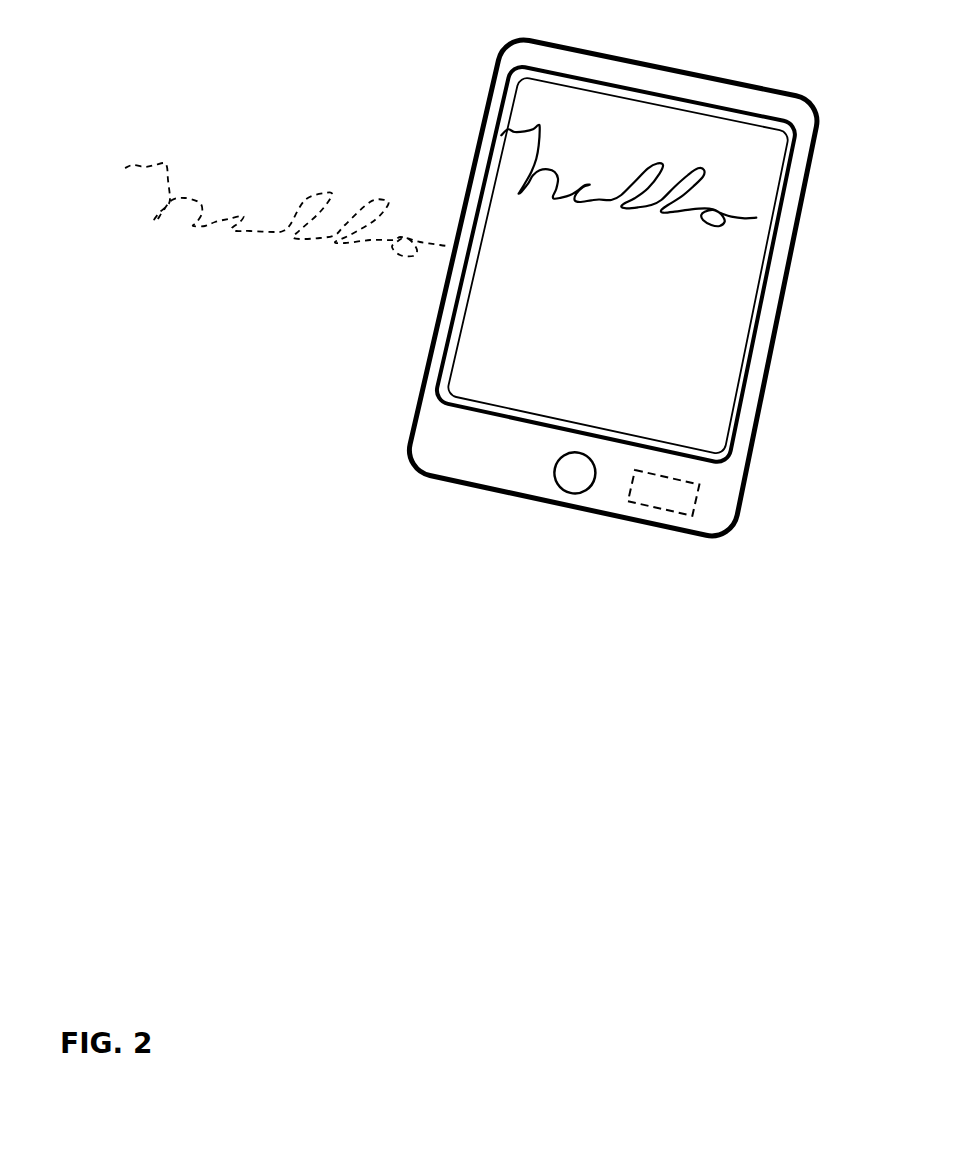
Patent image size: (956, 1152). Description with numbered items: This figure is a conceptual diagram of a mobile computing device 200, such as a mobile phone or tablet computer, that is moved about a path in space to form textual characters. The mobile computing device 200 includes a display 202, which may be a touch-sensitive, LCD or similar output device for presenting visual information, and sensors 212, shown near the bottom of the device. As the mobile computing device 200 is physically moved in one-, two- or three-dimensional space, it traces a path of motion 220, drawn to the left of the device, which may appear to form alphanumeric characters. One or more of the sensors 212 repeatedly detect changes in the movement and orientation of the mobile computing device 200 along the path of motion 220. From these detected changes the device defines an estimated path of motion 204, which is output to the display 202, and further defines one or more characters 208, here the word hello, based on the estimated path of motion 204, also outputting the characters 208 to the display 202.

The mobile computing device 200 is at (617, 55).
The display 202 is at (773, 272).
The estimated path of motion 204 is at (572, 210).
The characters 208 is at (565, 273).
The sensors 212 is at (660, 507).
The path of motion 220 is at (162, 167).